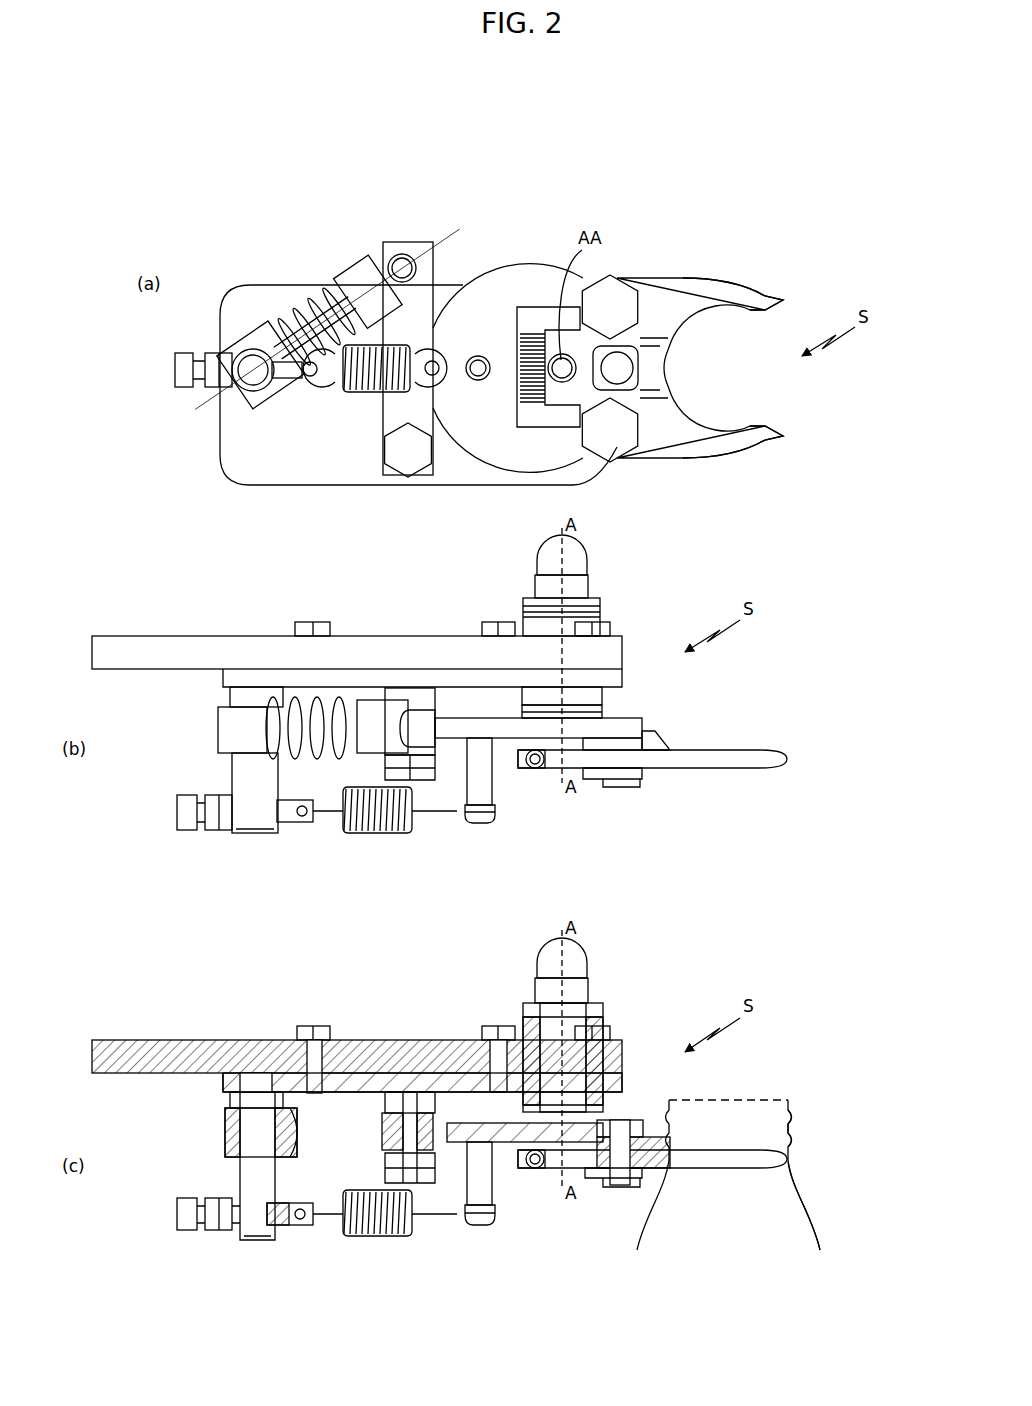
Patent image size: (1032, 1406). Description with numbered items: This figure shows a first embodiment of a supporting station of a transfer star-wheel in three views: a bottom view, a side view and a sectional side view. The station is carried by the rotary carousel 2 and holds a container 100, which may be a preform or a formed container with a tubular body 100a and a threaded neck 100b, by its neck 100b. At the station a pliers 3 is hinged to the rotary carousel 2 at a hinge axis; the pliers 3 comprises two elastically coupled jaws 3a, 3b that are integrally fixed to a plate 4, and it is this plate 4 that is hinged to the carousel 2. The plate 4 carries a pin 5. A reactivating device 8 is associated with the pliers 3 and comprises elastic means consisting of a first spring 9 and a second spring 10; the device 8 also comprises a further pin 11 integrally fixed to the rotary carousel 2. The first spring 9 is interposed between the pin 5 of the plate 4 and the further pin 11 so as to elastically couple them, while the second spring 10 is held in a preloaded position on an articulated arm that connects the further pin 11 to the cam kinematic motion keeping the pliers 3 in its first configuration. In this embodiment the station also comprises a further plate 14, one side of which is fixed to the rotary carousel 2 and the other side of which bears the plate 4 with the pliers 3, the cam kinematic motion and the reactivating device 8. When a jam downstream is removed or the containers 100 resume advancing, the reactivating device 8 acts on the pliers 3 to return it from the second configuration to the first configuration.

The rotary carousel 2 is at (168, 650).
The pliers 3 is at (686, 273).
The jaw 3a is at (742, 292).
The jaw 3b is at (716, 437).
The plate 4 is at (505, 283).
The pin 5 is at (478, 380).
The reactivating device 8 is at (327, 248).
The first spring 9 is at (356, 392).
The second spring 10 is at (316, 300).
The further pin 11 is at (236, 840).
The further plate 14 is at (258, 462).
The container 100 is at (795, 1091).
The tubular body 100a is at (795, 1230).
The threaded neck 100b is at (780, 1133).